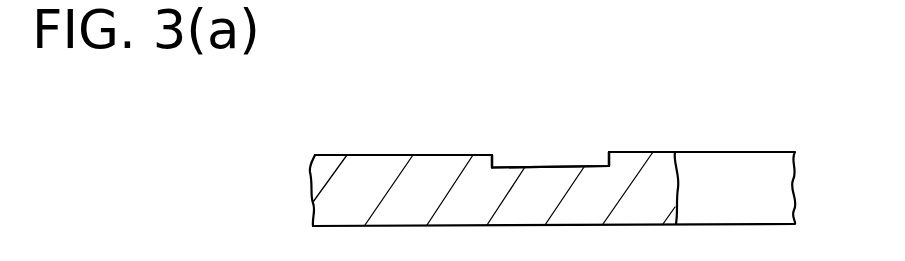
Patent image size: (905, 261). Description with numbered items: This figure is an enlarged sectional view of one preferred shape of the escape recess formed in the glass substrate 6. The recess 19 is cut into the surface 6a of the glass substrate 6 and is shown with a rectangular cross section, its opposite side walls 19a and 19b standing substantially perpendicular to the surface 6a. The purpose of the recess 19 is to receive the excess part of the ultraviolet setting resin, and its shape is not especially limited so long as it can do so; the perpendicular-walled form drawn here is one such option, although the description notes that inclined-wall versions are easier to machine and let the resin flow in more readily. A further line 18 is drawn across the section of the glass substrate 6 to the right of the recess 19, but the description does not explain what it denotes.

The glass substrate 6 is at (353, 177).
The surface of the glass substrate 6a is at (395, 153).
The recess 19 is at (552, 165).
The side wall 19a is at (503, 158).
The side wall 19b is at (608, 150).
The boundary line 18 is at (678, 185).